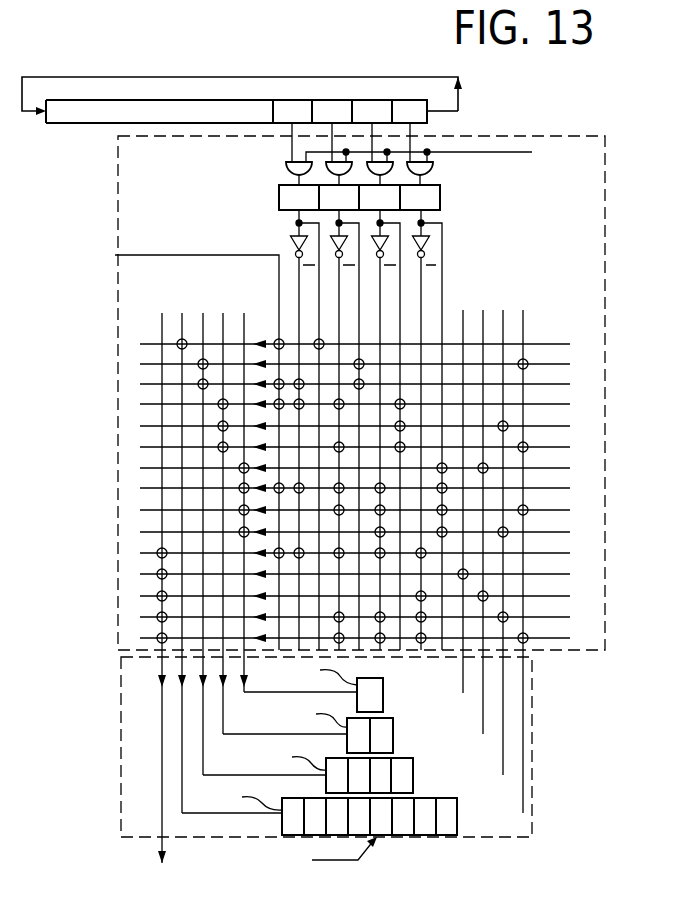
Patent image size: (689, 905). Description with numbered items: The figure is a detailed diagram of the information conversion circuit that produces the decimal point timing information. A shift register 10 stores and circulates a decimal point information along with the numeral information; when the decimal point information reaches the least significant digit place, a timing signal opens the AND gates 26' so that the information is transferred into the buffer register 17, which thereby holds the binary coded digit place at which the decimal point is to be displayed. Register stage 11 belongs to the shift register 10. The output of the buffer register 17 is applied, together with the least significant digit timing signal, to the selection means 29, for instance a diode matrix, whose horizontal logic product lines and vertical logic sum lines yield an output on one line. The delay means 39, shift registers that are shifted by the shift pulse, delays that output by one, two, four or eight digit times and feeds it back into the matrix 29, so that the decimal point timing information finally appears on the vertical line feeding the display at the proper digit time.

The shift register 10 is at (222, 123).
The register stage 11 is at (363, 112).
The buffer register 17 is at (440, 192).
The AND gates 26' is at (403, 159).
The selection means 29 is at (608, 332).
The delay means 39 is at (533, 765).